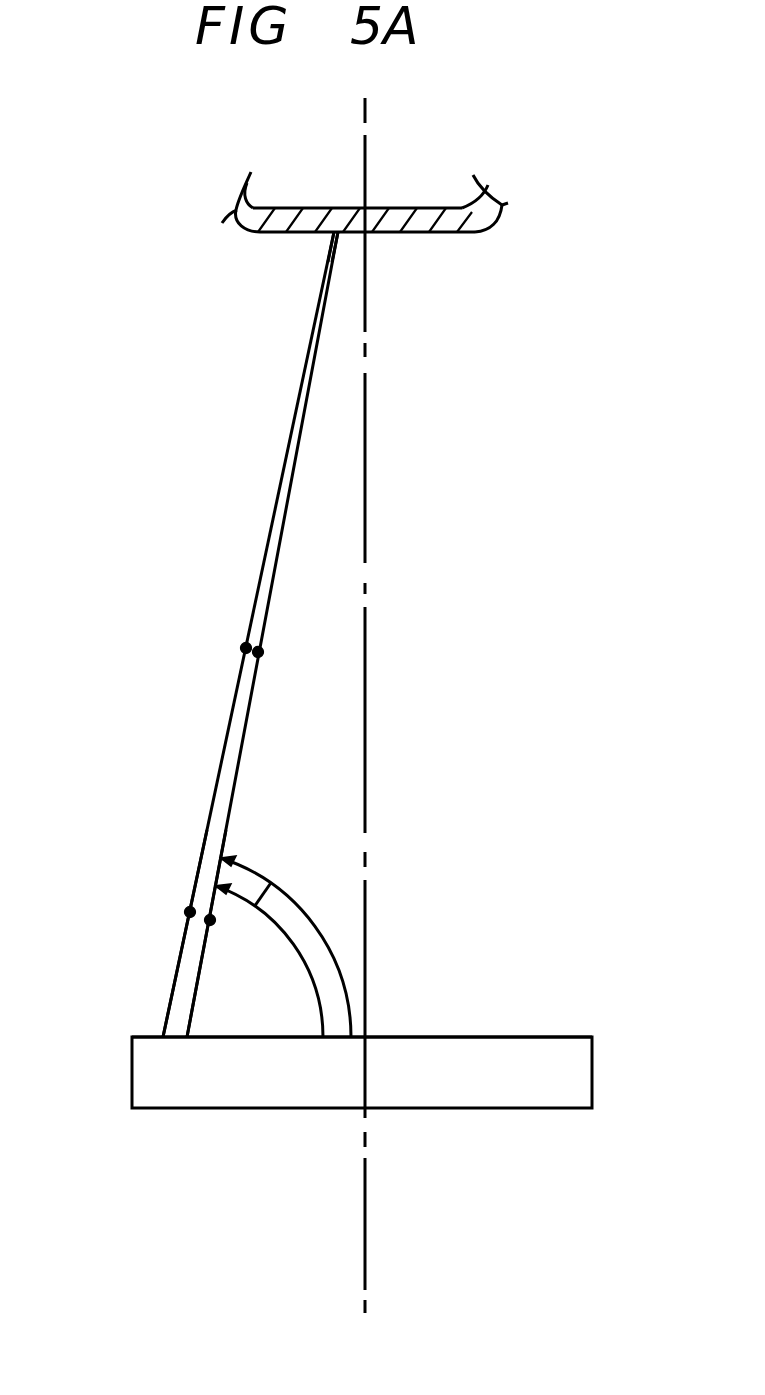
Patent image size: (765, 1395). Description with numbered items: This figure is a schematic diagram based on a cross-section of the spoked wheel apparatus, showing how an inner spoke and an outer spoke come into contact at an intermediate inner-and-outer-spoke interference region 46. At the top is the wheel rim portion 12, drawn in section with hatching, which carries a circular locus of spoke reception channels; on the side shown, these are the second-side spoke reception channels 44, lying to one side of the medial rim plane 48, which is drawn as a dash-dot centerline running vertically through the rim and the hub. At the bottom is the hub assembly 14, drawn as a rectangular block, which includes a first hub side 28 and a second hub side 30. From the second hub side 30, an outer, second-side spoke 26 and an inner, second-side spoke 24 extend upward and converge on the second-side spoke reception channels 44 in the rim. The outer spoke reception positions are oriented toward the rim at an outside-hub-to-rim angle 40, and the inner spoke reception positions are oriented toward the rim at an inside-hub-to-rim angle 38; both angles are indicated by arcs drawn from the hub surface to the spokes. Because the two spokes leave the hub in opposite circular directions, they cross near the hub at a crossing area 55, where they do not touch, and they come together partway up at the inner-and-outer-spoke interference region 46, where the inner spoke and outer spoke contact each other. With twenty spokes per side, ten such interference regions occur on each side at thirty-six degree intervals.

The medial rim plane 48 is at (365, 160).
The wheel rim portion 12 is at (457, 243).
The second-side spoke reception channels 44 is at (338, 236).
The outer, second-side spoke 26 is at (264, 573).
The inner, second-side spoke 24 is at (282, 554).
The inner-and-outer-spoke interference region 46 is at (248, 667).
The crossing area 55 is at (194, 893).
The second hub side 30 is at (158, 1003).
The inside-hub-to-rim angle 38 is at (323, 932).
The outside-hub-to-rim angle 40 is at (270, 883).
The first hub side 28 is at (533, 1030).
The hub assembly 14 is at (425, 1022).